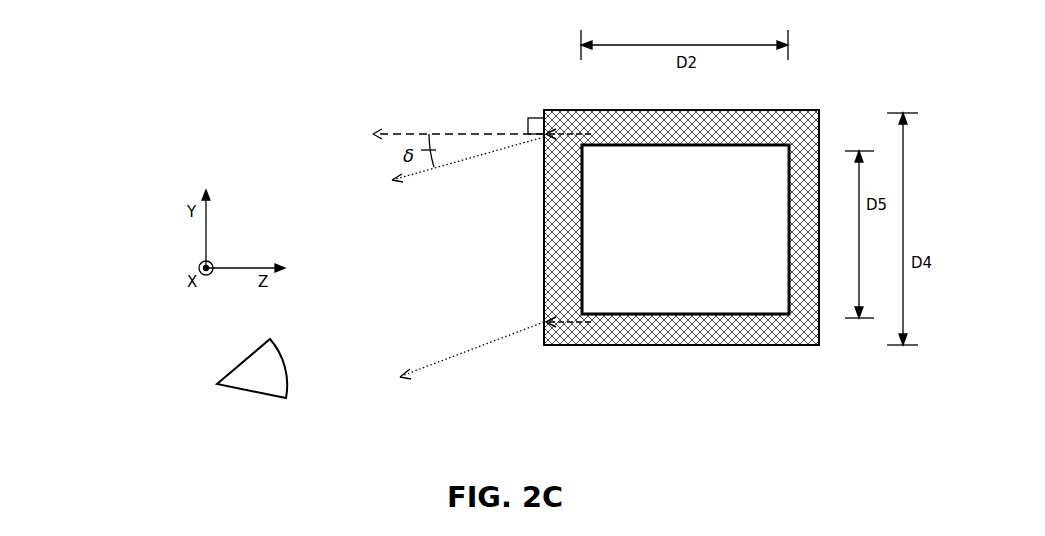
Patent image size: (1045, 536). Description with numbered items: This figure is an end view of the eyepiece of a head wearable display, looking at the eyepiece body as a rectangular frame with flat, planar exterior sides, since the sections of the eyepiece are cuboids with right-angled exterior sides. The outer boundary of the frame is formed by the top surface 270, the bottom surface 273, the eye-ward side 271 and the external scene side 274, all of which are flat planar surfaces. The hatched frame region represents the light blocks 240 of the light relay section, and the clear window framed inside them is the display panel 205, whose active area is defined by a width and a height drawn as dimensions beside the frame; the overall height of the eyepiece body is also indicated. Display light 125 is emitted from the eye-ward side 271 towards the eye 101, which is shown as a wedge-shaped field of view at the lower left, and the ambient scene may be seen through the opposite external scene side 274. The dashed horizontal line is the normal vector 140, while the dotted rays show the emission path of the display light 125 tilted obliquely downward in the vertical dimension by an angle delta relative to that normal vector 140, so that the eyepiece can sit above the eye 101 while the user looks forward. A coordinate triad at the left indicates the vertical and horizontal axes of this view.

The eye 101 is at (267, 388).
The display light 125 is at (492, 153).
The normal vector 140 is at (390, 134).
The display panel 205 is at (699, 228).
The light blocks 240 is at (690, 128).
The top surface 270 is at (790, 110).
The eye-ward side 271 is at (530, 223).
The bottom surface 273 is at (722, 345).
The external scene side 274 is at (837, 337).